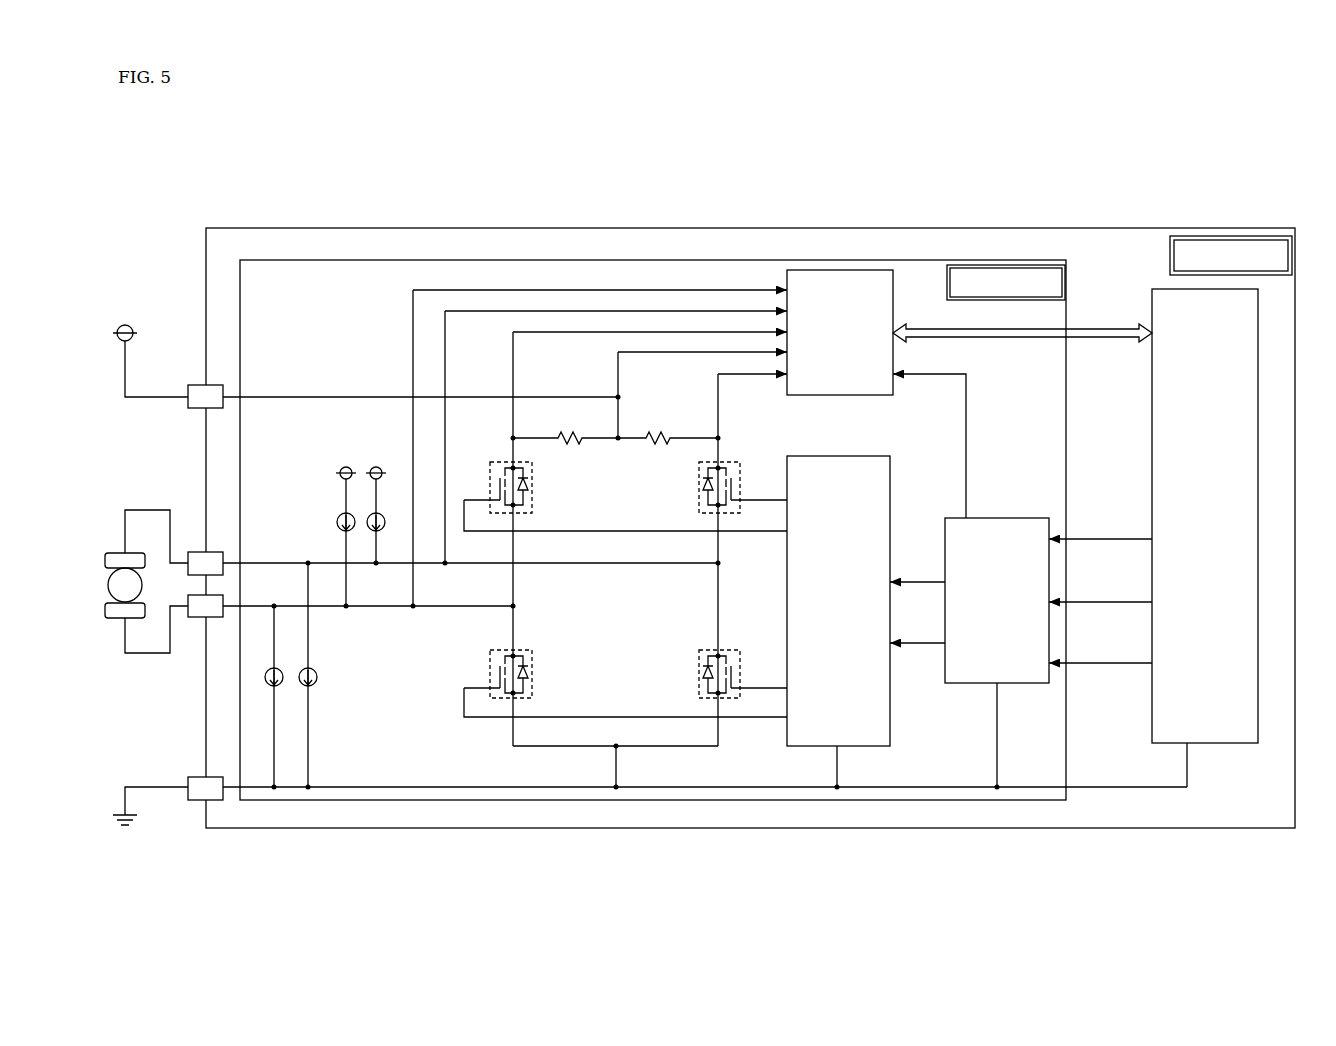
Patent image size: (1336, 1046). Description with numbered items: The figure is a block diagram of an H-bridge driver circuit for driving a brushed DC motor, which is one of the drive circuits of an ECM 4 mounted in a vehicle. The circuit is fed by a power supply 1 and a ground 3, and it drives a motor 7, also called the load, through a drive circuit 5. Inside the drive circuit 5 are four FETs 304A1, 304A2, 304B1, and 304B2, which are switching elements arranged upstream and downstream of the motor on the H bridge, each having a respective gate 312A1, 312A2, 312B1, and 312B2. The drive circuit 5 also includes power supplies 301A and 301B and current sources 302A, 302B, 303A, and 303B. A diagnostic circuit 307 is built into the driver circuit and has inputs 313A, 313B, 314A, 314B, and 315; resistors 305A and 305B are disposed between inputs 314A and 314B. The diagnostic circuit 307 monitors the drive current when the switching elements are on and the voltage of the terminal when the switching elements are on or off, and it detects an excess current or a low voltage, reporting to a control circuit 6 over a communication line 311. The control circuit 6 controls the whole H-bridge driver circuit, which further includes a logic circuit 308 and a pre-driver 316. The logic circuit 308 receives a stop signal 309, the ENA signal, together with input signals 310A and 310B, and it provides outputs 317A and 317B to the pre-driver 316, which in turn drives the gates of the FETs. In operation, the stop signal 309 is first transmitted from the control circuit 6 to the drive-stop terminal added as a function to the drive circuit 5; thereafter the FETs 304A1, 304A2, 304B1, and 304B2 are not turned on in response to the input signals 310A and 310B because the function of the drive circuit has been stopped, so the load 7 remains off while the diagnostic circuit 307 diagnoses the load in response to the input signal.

The power supply 1 is at (118, 326).
The ground terminal 3 is at (118, 812).
The ECM 4 is at (1232, 236).
The drive circuit 5 is at (1010, 260).
The control circuit 6 is at (1260, 518).
The motor 7 is at (120, 553).
The power supply 301A is at (372, 467).
The power supply 301B is at (340, 468).
The current source 302A is at (384, 514).
The current source 302B is at (338, 515).
The current source 303A is at (318, 677).
The current source 303B is at (283, 683).
The FET 304A1 is at (698, 492).
The FET 304A2 is at (533, 680).
The FET 304B1 is at (535, 490).
The FET 304B2 is at (698, 680).
The resistor 305A is at (665, 435).
The resistor 305B is at (563, 435).
The diagnostic circuit 307 is at (838, 270).
The logic circuit 308 is at (1000, 518).
The stop signal (ENA signal) 309 is at (1093, 514).
The input signal 310A is at (1090, 606).
The input signal 310B is at (1092, 666).
The communication line 311 is at (1013, 341).
The gate 312A1 is at (753, 492).
The gate 312A2 is at (466, 674).
The gate 312B1 is at (466, 484).
The gate 312B2 is at (752, 676).
The input 313A is at (486, 312).
The input 313B is at (452, 290).
The input 314A is at (724, 318).
The input 314B is at (640, 316).
The input 315 is at (967, 409).
The pre-driver 316 is at (893, 524).
The output 317A is at (922, 585).
The output 317B is at (928, 646).